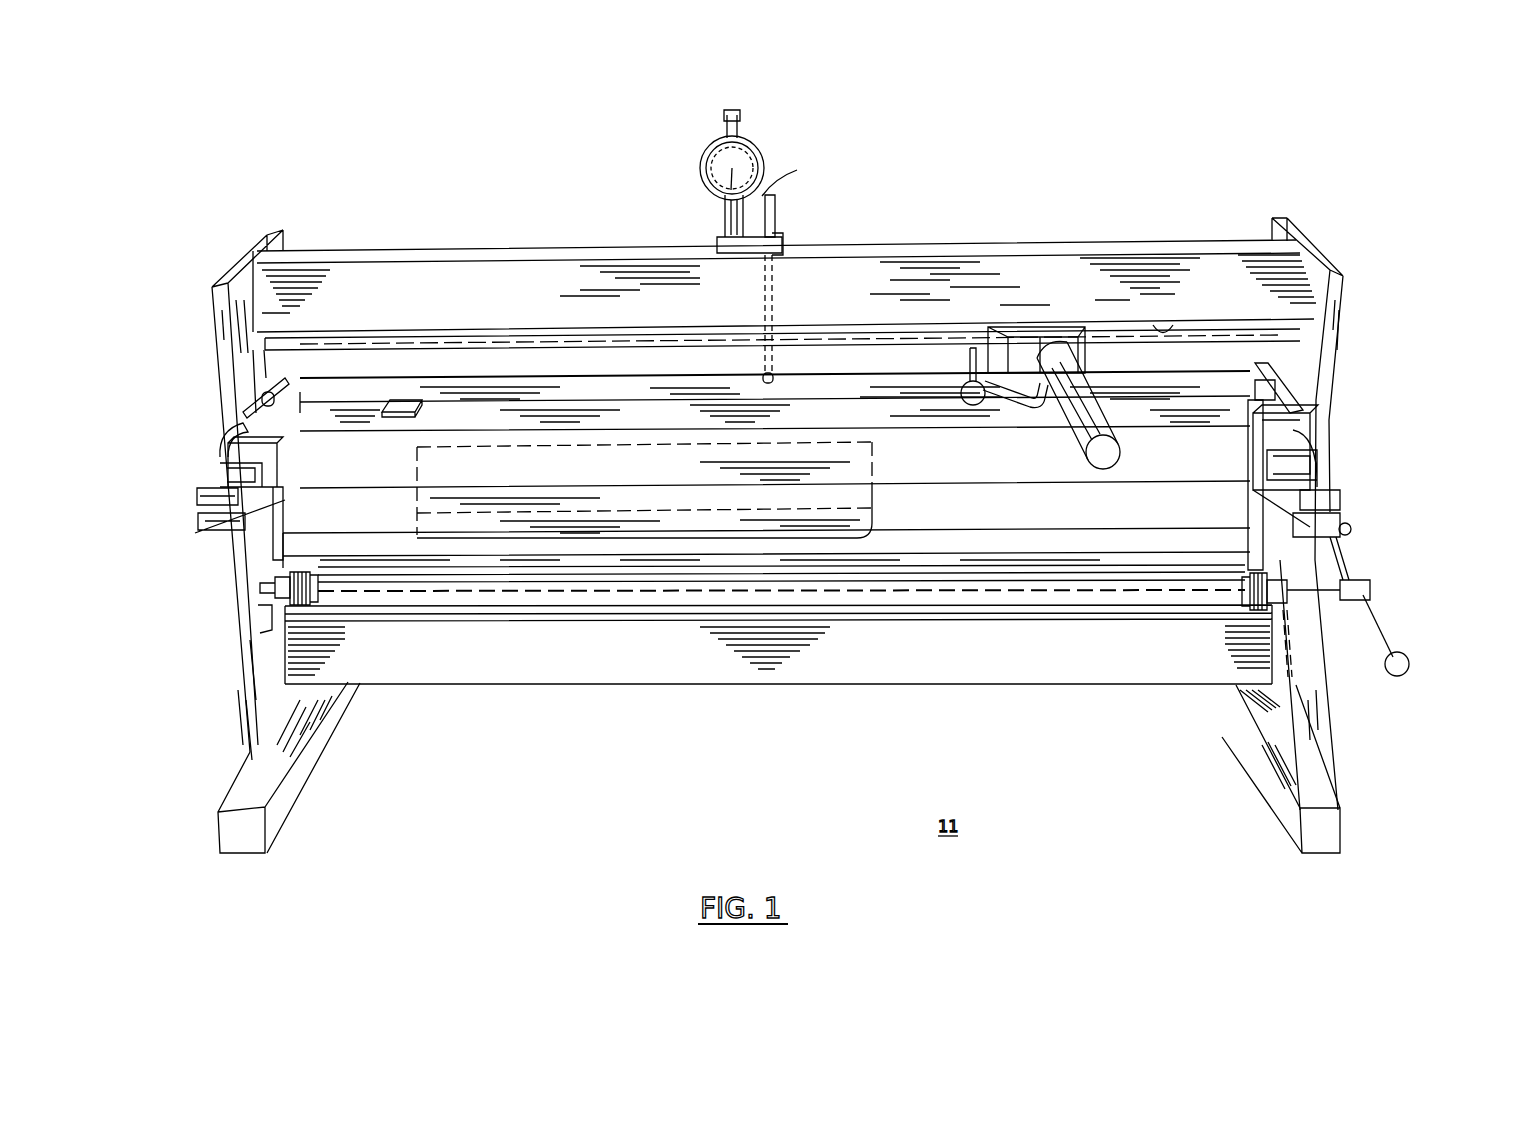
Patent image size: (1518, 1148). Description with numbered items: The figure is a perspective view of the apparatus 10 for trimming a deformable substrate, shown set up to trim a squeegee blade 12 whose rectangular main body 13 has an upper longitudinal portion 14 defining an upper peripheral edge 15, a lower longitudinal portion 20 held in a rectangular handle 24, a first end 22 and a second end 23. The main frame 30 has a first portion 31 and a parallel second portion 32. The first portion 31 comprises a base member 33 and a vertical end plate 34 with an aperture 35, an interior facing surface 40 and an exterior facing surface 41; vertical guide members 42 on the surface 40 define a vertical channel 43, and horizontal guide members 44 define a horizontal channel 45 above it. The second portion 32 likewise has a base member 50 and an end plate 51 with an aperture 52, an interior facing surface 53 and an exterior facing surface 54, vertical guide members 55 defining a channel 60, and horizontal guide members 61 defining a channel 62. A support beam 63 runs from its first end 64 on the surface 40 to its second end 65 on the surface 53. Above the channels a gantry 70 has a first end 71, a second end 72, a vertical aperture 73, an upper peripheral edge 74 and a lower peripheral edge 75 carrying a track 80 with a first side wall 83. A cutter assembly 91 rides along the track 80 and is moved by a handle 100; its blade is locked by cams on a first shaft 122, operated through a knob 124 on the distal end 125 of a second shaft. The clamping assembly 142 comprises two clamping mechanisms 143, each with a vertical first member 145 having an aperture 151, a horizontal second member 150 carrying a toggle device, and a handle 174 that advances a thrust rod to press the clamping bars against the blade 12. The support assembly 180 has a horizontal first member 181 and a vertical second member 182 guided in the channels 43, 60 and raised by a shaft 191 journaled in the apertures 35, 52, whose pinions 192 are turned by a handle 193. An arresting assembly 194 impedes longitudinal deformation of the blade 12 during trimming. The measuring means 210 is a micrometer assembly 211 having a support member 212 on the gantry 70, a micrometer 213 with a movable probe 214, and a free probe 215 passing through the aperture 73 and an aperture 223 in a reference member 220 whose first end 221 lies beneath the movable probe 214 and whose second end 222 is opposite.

The apparatus 10 is at (1302, 208).
The squeegee blade 12 is at (533, 365).
The main body 13 is at (611, 437).
The upper longitudinal portion 14 is at (660, 392).
The upper longitudinally disposed peripheral edge 15 is at (713, 380).
The lower longitudinal portion 20 is at (766, 439).
The first end 22 is at (437, 418).
The second end 23 is at (860, 413).
The handle 24 is at (613, 522).
The main frame 30 is at (1340, 446).
The first portion 31 is at (207, 378).
The second portion 32 is at (1345, 358).
The base member 33 is at (262, 765).
The end plate 34 is at (270, 625).
The aperture 35 is at (262, 583).
The interior facing surface 40 is at (246, 680).
The exterior facing surface 41 is at (243, 645).
The guide members 42 is at (282, 518).
The channel 43 is at (308, 517).
The guide members 44 is at (232, 410).
The channel 45 is at (240, 394).
The base member 50 is at (1307, 787).
The end plate 51 is at (1340, 373).
The aperture 52 is at (1290, 597).
The interior facing surface 53 is at (1280, 688).
The exterior facing surface 54 is at (1318, 710).
The guide members 55 is at (1345, 547).
The channel 60 is at (1235, 560).
The guide members 61 is at (1300, 412).
The channel 62 is at (1267, 403).
The support beam 63 is at (700, 643).
The first end 64 is at (312, 654).
The second end 65 is at (1262, 663).
The gantry 70 is at (1027, 265).
The first end 71 is at (282, 272).
The second end 72 is at (1262, 273).
The aperture 73 is at (765, 300).
The upper peripheral edge 74 is at (1105, 250).
The lower peripheral edge 75 is at (1168, 333).
The track 80 is at (375, 340).
The first side wall 83 is at (308, 340).
The cutter assembly 91 is at (1064, 326).
The handle 100 is at (1078, 430).
The first shaft 122 is at (1043, 353).
The knob 124 is at (977, 348).
The distal end 125 is at (1033, 452).
The clamping assembly 142 is at (1335, 474).
The clamping mechanisms 143 is at (197, 500).
The first member 145 is at (1283, 432).
The second member 150 is at (1317, 527).
The aperture 151 is at (1290, 427).
The handle 174 is at (220, 450).
The support assembly 180 is at (665, 570).
The first member 181 is at (920, 543).
The second member 182 is at (1000, 610).
The shaft 191 is at (1110, 593).
The pinions 192 is at (310, 609).
The handle 193 is at (1390, 642).
The arresting assembly 194 is at (398, 385).
The measuring means 210 is at (705, 132).
The micrometer assembly 211 is at (787, 182).
The support member 212 is at (722, 210).
The micrometer 213 is at (712, 165).
The movable probe 214 is at (787, 182).
The free probe 215 is at (777, 208).
The reference member 220 is at (743, 252).
The first end 221 is at (722, 243).
The second end 222 is at (782, 253).
The aperture 223 is at (785, 245).